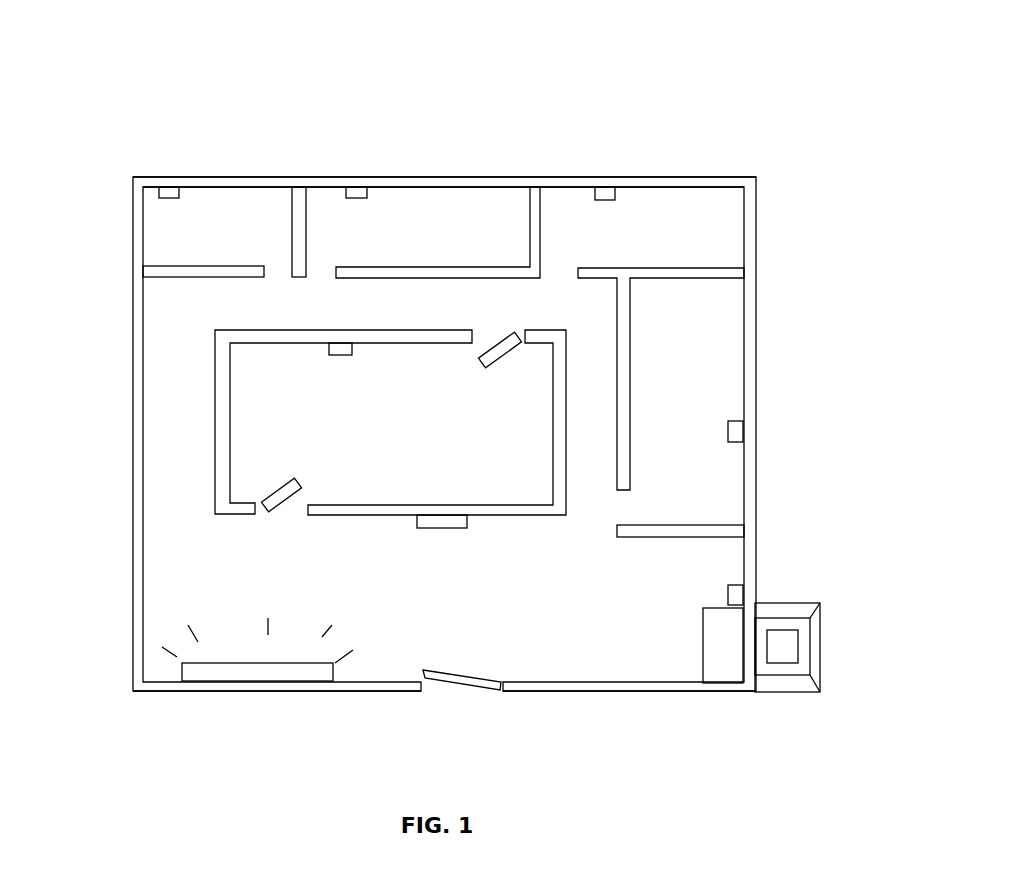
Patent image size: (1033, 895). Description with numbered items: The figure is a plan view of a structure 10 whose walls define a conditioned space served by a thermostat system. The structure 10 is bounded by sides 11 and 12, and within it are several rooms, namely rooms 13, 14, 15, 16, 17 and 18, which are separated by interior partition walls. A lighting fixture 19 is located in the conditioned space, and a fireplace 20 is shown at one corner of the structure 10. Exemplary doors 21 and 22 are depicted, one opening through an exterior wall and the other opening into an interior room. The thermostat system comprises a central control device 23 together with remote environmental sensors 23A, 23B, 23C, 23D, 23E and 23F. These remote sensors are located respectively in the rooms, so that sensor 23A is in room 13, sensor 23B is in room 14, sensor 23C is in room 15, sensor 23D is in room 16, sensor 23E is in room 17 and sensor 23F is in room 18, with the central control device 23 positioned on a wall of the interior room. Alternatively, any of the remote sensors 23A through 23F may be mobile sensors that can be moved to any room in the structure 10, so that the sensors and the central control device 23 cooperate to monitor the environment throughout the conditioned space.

The structure 10 is at (737, 168).
The side 11 is at (663, 691).
The side 12 is at (207, 176).
The room 13 is at (490, 625).
The room 14 is at (703, 393).
The room 15 is at (671, 228).
The room 16 is at (462, 225).
The room 17 is at (228, 213).
The room 18 is at (283, 415).
The lighting fixture 19 is at (205, 676).
The fireplace 20 is at (812, 603).
The door 21 is at (419, 691).
The door 22 is at (253, 513).
The central control device 23 is at (440, 523).
The remote sensor 23A is at (740, 596).
The remote sensor 23B is at (740, 432).
The remote sensor 23C is at (603, 187).
The remote sensor 23D is at (357, 188).
The remote sensor 23E is at (167, 190).
The remote sensor 23F is at (332, 347).